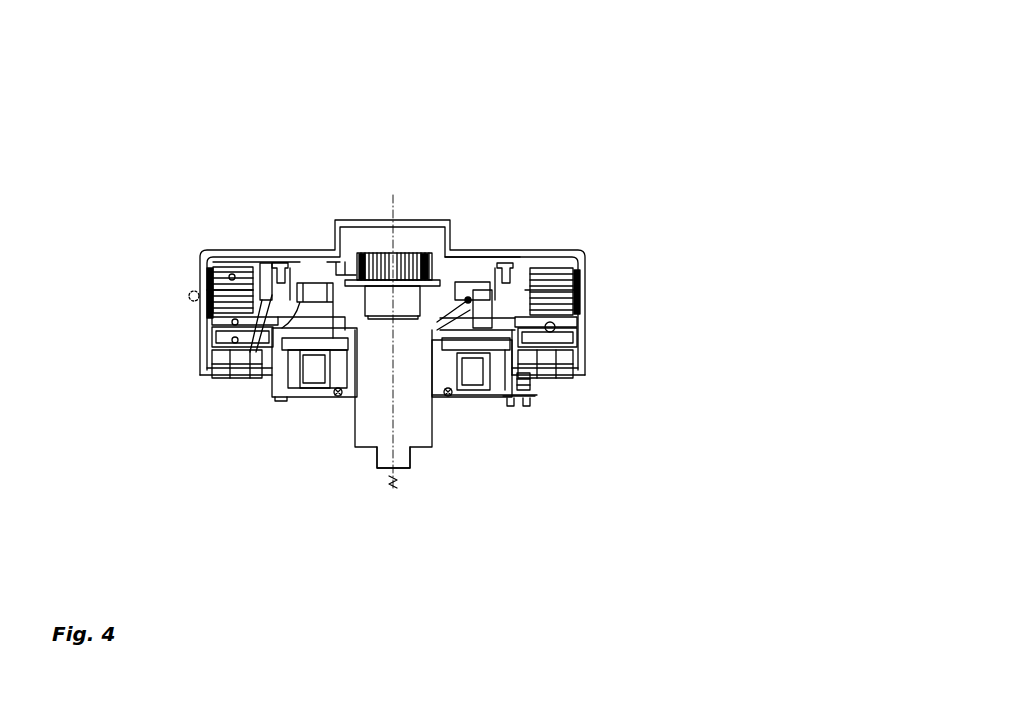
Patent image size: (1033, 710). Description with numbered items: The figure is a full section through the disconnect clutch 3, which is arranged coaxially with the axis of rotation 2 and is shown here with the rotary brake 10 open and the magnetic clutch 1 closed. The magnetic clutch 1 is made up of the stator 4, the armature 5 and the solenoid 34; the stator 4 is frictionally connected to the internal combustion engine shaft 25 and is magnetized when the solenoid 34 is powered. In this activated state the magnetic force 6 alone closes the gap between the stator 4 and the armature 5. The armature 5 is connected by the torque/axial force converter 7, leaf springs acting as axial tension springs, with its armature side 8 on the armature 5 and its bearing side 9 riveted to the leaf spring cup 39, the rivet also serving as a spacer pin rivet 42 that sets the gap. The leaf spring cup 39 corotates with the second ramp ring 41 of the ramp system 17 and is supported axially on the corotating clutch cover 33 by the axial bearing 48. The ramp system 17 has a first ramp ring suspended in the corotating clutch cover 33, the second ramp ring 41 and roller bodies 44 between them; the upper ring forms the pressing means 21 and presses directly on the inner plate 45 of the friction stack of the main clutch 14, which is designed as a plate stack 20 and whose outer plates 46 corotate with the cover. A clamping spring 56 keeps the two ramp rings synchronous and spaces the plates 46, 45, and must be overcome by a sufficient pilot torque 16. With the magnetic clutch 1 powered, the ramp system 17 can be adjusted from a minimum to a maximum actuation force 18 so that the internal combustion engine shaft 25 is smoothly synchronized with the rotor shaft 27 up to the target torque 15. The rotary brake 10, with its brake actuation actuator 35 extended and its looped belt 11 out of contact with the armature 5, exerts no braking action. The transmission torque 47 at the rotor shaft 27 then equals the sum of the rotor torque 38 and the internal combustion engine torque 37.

The magnetic clutch 1 is at (186, 405).
The axis of rotation 2 is at (396, 476).
The disconnect clutch 3 is at (692, 66).
The stator 4 is at (296, 342).
The armature 5 is at (272, 350).
The magnetic force 6 is at (312, 380).
The torque/axial force converter 7 is at (322, 160).
The armature side 8 is at (278, 262).
The bearing side 9 is at (343, 262).
The rotary brake 10 is at (592, 430).
The looped belt 11 is at (522, 406).
The main clutch 14 is at (758, 238).
The target torque 15 is at (541, 252).
The pilot torque 16 is at (585, 365).
The ramp system 17 is at (680, 300).
The actuation force 18 is at (548, 362).
The plate stack 20 is at (587, 289).
The pressing means 21 is at (586, 298).
The internal combustion engine shaft 25 is at (434, 442).
The rotor shaft 27 is at (388, 256).
The corotating clutch cover 33 is at (583, 252).
The solenoid 34 is at (328, 338).
The brake actuation actuator 35 is at (514, 404).
The internal combustion engine torque 37 is at (392, 478).
The rotor torque 38 is at (189, 293).
The leaf spring cup 39 is at (262, 262).
The second ramp ring 41 is at (584, 338).
The spacer pin rivet 42 is at (502, 250).
The roller bodies 44 is at (584, 322).
The inner plate 45 is at (249, 262).
The outer plates 46 is at (205, 270).
The transmission torque 47 is at (437, 258).
The axial bearing 48 is at (207, 346).
The clamping spring 56 is at (207, 300).